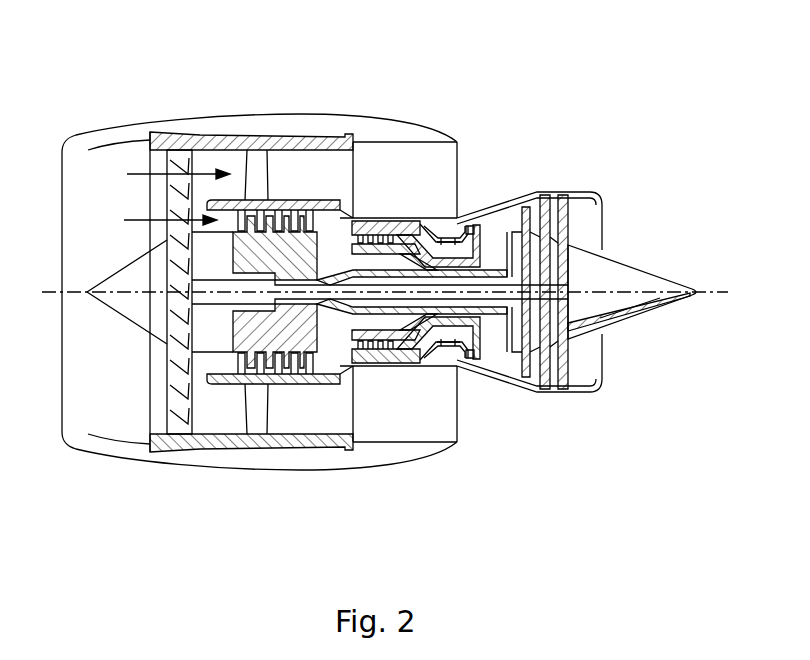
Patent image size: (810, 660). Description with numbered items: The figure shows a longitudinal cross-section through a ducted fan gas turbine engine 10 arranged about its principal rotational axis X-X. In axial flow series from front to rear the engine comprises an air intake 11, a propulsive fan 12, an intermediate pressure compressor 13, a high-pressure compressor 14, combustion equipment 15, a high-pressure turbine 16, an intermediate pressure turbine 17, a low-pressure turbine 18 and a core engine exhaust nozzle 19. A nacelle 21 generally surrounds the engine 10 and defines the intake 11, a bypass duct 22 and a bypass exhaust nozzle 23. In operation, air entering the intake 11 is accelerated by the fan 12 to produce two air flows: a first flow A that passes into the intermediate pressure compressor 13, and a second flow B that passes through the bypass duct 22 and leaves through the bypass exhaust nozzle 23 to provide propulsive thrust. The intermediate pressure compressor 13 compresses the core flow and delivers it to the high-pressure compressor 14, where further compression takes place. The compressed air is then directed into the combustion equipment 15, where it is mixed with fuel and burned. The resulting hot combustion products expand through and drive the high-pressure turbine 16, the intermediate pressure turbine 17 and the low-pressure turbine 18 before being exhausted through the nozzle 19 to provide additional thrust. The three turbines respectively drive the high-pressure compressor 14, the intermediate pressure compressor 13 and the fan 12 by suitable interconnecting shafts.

The ducted fan gas turbine engine 10 is at (126, 99).
The air intake 11 is at (100, 148).
The propulsive fan 12 is at (166, 396).
The intermediate pressure compressor 13 is at (286, 372).
The high-pressure compressor 14 is at (377, 232).
The combustion equipment 15 is at (418, 357).
The high-pressure turbine 16 is at (472, 364).
The intermediate pressure turbine 17 is at (497, 214).
The low-pressure turbine 18 is at (520, 387).
The core engine exhaust nozzle 19 is at (598, 191).
The nacelle 21 is at (262, 116).
The bypass duct 22 is at (433, 179).
The bypass exhaust nozzle 23 is at (458, 141).